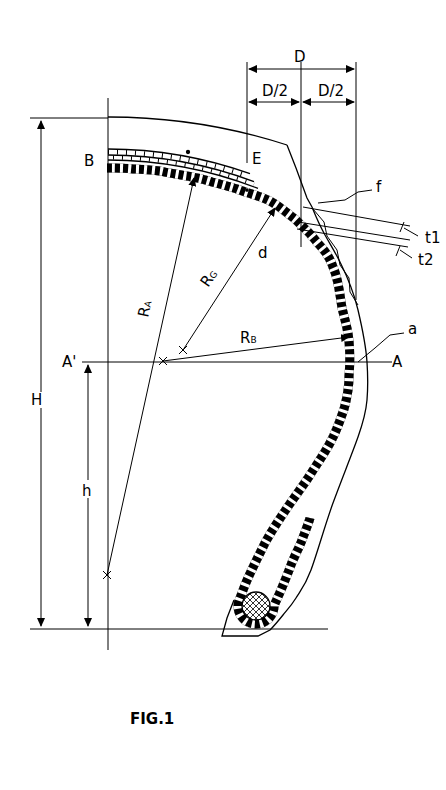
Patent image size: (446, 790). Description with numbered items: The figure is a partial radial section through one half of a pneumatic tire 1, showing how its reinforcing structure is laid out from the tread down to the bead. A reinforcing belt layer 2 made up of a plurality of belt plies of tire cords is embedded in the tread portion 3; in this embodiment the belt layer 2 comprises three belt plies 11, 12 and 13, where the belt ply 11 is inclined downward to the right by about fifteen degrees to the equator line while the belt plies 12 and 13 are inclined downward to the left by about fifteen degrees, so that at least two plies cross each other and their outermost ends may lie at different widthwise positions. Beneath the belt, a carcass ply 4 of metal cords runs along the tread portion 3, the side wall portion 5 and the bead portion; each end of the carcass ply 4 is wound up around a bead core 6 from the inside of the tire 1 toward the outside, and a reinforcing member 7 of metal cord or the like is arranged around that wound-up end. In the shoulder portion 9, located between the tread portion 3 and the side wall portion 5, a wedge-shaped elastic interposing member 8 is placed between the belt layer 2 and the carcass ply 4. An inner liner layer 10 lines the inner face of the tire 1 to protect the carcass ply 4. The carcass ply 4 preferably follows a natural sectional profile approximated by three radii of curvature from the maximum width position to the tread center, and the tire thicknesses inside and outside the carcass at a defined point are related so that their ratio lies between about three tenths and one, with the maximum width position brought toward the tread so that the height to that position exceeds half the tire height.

The tire 1 is at (176, 115).
The belt layer 2 is at (189, 151).
The tread portion 3 is at (140, 114).
The carcass ply 4 is at (166, 174).
The side wall portion 5 is at (364, 312).
The bead core 6 is at (268, 628).
The reinforcing member 7 is at (294, 552).
The elastic interposing member 8 is at (247, 191).
The shoulder portion 9 is at (311, 198).
The inner liner layer 10 is at (144, 172).
The belt ply 11 is at (108, 161).
The belt ply 12 is at (108, 155).
The belt ply 13 is at (108, 149).